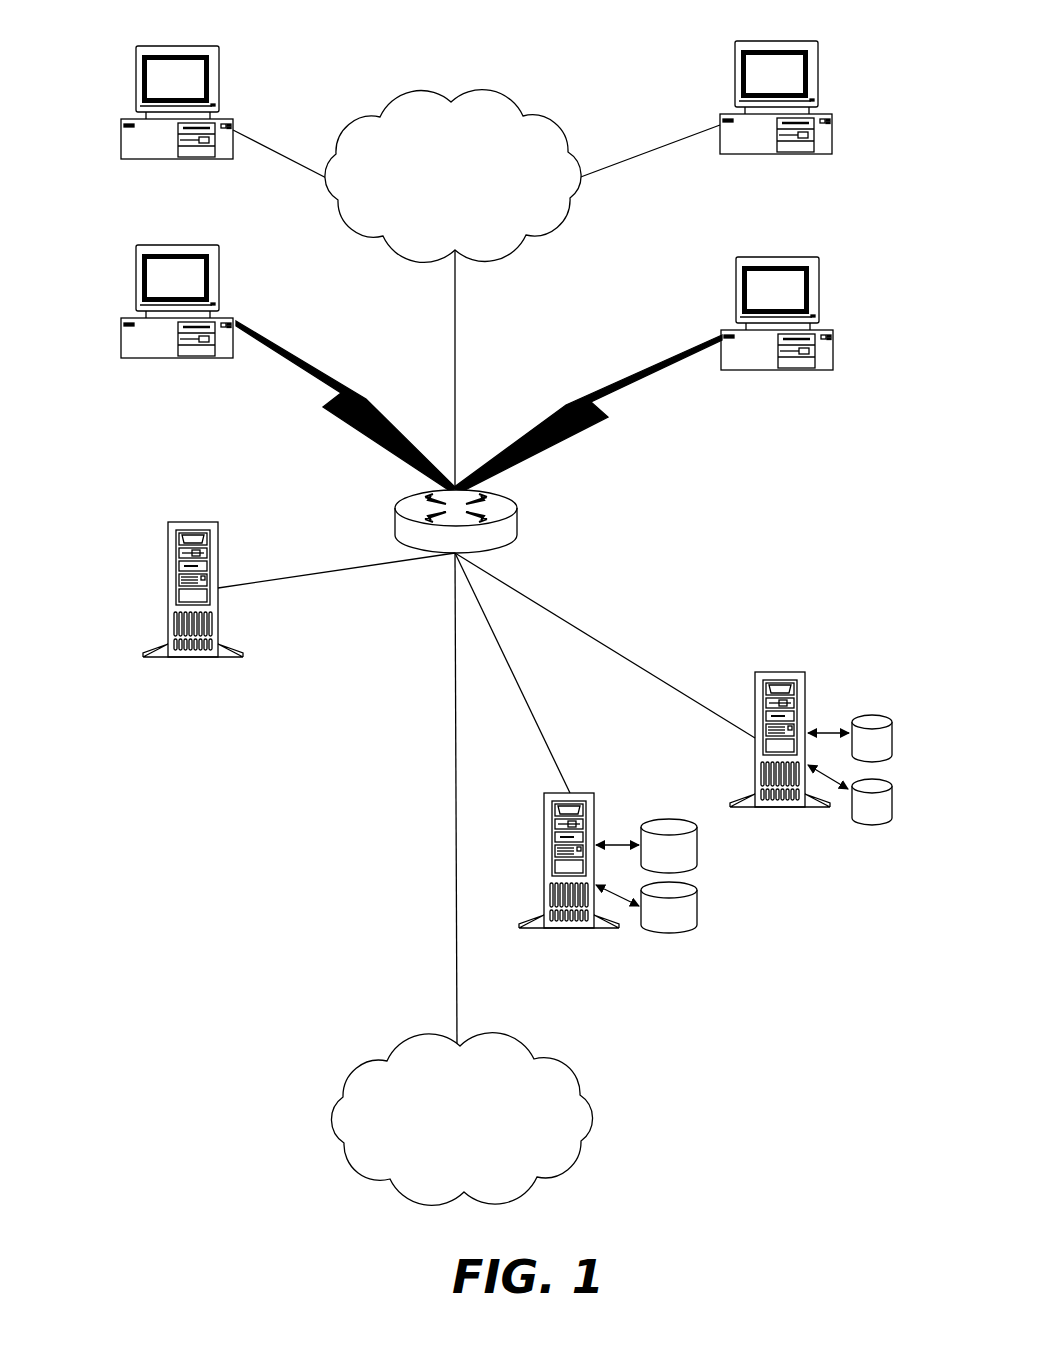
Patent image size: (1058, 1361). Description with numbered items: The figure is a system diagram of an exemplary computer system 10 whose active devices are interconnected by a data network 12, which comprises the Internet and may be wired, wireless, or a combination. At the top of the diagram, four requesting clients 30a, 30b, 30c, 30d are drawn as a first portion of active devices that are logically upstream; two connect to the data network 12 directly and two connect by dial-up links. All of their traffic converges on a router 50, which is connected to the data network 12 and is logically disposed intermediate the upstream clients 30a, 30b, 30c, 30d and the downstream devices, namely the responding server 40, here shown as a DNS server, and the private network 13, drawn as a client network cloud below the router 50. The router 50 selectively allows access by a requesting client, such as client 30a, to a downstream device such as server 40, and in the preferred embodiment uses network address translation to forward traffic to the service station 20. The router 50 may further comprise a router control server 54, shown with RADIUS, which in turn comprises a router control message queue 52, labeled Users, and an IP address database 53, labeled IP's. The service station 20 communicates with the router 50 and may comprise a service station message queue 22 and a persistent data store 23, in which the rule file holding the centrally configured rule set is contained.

The computer system 10 is at (200, 810).
The data network 12 is at (438, 102).
The private network 13 is at (360, 1082).
The service station 20 is at (806, 690).
The service station message queue 22 is at (893, 730).
The persistent data store 23 is at (893, 790).
The requesting client 30a is at (136, 66).
The requesting client 30b is at (818, 70).
The requesting client 30c is at (136, 272).
The requesting client 30d is at (820, 283).
The server 40 is at (168, 535).
The router 50 is at (395, 516).
The router control message queue 52 is at (698, 858).
The IP address database 53 is at (698, 918).
The router control server 54 is at (544, 812).